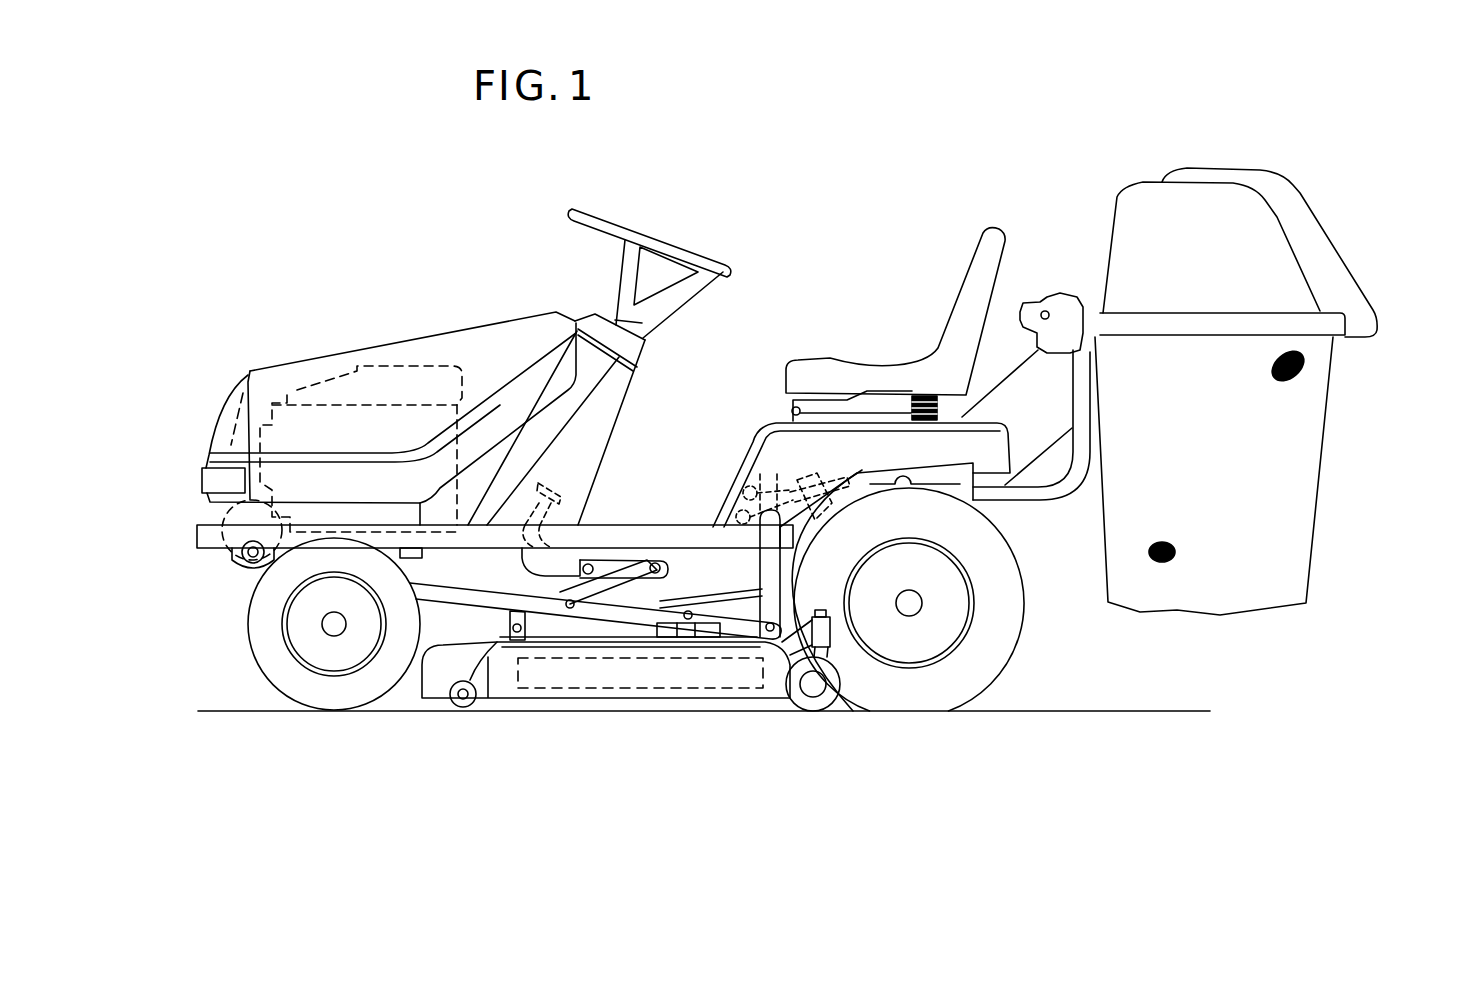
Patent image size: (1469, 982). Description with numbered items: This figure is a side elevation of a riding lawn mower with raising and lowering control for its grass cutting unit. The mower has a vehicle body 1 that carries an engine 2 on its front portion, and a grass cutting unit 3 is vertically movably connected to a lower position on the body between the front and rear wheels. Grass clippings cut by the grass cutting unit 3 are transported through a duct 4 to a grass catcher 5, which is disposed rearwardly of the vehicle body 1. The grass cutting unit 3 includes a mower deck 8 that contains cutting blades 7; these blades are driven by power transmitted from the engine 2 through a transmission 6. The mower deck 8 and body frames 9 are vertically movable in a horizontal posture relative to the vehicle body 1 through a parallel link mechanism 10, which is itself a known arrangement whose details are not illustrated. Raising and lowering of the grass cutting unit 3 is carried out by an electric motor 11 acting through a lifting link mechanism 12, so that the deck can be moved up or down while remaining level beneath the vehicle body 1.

The vehicle body 1 is at (354, 334).
The engine 2 is at (297, 390).
The grass cutting unit 3 is at (558, 702).
The duct 4 is at (1027, 503).
The grass catcher 5 is at (1327, 393).
The transmission 6 is at (851, 694).
The cutting blades 7 is at (770, 692).
The mower deck 8 is at (692, 683).
The body frames 9 is at (645, 537).
The parallel link mechanism 10 is at (613, 560).
The electric motor 11 is at (800, 470).
The lifting link mechanism 12 is at (760, 482).